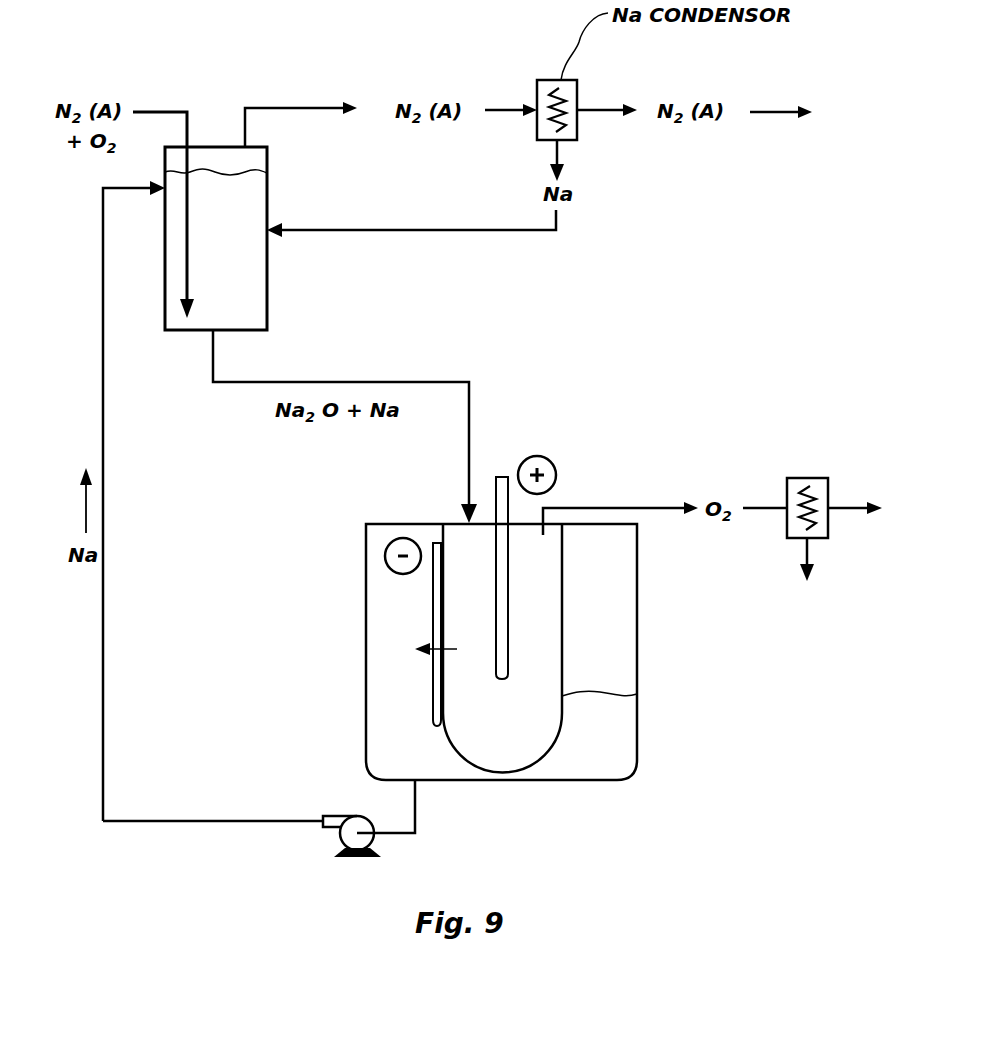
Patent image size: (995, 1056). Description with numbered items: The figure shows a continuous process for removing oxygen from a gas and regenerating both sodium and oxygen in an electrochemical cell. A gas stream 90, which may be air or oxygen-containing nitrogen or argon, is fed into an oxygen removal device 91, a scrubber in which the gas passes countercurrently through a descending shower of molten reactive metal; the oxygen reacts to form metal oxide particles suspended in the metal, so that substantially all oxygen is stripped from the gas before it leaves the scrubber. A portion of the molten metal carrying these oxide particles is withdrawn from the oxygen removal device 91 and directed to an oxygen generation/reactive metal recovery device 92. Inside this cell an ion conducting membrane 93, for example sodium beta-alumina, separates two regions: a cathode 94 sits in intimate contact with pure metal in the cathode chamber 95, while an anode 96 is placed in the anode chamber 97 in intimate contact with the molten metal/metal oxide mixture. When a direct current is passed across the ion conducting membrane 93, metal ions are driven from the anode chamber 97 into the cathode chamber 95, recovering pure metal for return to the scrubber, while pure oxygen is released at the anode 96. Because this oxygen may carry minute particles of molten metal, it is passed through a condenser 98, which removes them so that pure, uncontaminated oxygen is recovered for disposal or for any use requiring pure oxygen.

The gas stream 90 is at (153, 112).
The oxygen removal device 91 is at (267, 283).
The oxygen generation/reactive metal recovery device 92 is at (637, 655).
The ion conducting membrane 93 is at (637, 694).
The cathode 94 is at (433, 704).
The cathode chamber 95 is at (390, 587).
The anode 96 is at (494, 494).
The anode chamber 97 is at (484, 597).
The condenser 98 is at (800, 478).